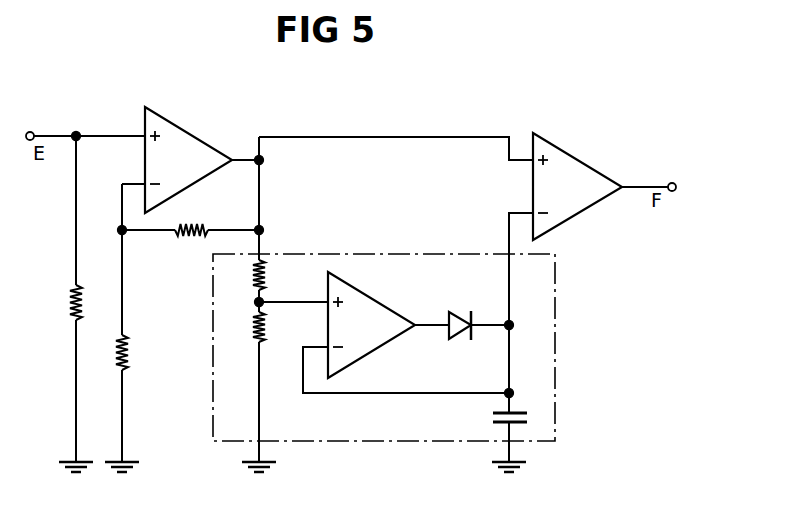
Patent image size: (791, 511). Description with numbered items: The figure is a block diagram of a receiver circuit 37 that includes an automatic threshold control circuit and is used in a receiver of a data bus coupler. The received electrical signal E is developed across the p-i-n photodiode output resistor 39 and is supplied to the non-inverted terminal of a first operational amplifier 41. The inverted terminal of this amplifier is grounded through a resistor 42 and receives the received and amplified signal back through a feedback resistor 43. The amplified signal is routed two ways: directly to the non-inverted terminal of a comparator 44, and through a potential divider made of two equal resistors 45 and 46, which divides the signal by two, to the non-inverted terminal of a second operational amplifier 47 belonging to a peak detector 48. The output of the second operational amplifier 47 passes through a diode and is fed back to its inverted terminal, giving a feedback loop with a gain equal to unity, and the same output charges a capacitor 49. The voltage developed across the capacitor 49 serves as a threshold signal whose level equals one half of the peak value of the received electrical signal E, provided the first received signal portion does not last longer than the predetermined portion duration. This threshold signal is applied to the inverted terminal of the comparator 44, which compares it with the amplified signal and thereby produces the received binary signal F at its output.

The receiver circuit 37 is at (572, 408).
The p-i-n photodiode output resistor 39 is at (83, 301).
The first operational amplifier 41 is at (196, 168).
The resistor 42 is at (129, 352).
The feedback resistor 43 is at (189, 238).
The comparator 44 is at (582, 196).
The resistor 45 is at (267, 275).
The resistor 46 is at (267, 330).
The second operational amplifier 47 is at (388, 338).
The peak detector 48 is at (556, 274).
The capacitor 49 is at (493, 414).